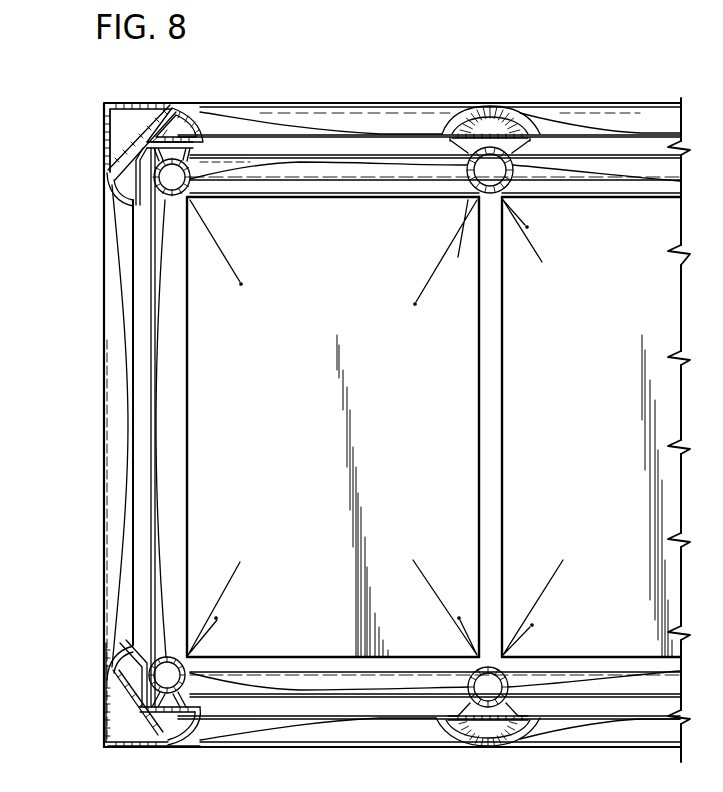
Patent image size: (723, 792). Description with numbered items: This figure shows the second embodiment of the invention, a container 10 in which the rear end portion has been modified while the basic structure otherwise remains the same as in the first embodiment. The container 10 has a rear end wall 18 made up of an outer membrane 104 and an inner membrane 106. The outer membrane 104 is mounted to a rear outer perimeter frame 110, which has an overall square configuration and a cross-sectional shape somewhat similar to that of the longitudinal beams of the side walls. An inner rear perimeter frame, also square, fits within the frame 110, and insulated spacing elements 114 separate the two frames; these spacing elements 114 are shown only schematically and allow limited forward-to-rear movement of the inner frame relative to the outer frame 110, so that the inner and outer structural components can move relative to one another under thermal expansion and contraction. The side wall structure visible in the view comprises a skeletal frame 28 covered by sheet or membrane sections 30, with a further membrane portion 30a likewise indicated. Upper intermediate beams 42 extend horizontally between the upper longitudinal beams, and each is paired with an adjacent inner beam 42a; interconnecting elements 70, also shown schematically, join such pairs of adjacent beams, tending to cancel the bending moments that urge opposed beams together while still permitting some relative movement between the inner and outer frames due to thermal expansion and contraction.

The container 10 is at (88, 108).
The rear end wall 18 is at (100, 288).
The skeletal frame 28 is at (537, 110).
The membrane section 30 is at (357, 130).
The glazing channel 30a is at (285, 165).
The upper intermediate beam 42 is at (493, 108).
The upper intermediate beam (inner frame) 42a is at (470, 180).
The interconnecting element 70 is at (515, 147).
The outer membrane 104 is at (118, 253).
The inner membrane 106 is at (167, 270).
The rear outer perimeter frame 110 is at (108, 155).
The insulated spacing element 114 is at (208, 135).